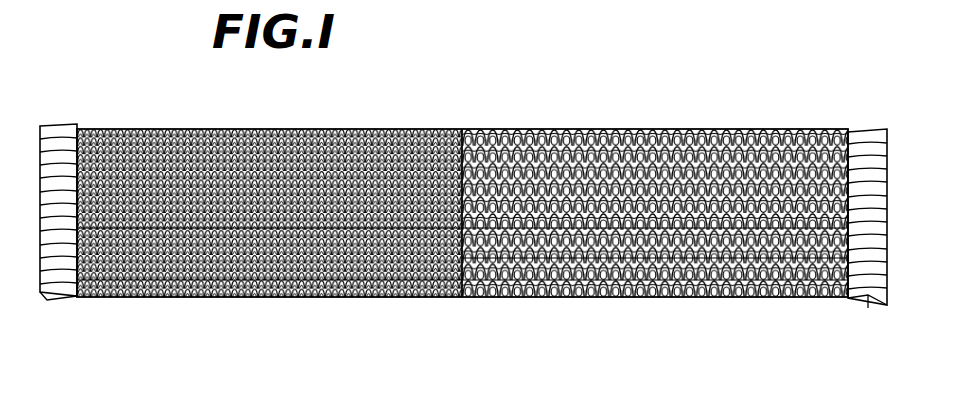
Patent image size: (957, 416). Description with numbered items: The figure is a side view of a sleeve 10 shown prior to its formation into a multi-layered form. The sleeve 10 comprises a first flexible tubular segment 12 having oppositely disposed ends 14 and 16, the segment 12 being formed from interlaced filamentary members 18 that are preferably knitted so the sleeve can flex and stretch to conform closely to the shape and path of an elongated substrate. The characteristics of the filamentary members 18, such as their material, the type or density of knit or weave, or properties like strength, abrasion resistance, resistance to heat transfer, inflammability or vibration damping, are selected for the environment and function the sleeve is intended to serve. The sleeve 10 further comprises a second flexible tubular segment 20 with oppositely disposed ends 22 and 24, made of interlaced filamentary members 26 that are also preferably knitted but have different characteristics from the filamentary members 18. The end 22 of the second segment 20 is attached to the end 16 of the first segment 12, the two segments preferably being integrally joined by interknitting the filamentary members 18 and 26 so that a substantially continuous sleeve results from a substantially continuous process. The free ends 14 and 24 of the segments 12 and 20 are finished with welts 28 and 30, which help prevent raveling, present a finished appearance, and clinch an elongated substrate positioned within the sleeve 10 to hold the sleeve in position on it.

The sleeve 10 is at (623, 112).
The first flexible tubular segment 12 is at (574, 298).
The end 14 is at (862, 128).
The end 16 is at (470, 128).
The filamentary members 18 is at (628, 283).
The second flexible tubular segment 20 is at (330, 298).
The end 22 is at (456, 128).
The end 24 is at (62, 124).
The filamentary members 26 is at (192, 283).
The welt 28 is at (868, 306).
The welt 30 is at (50, 298).